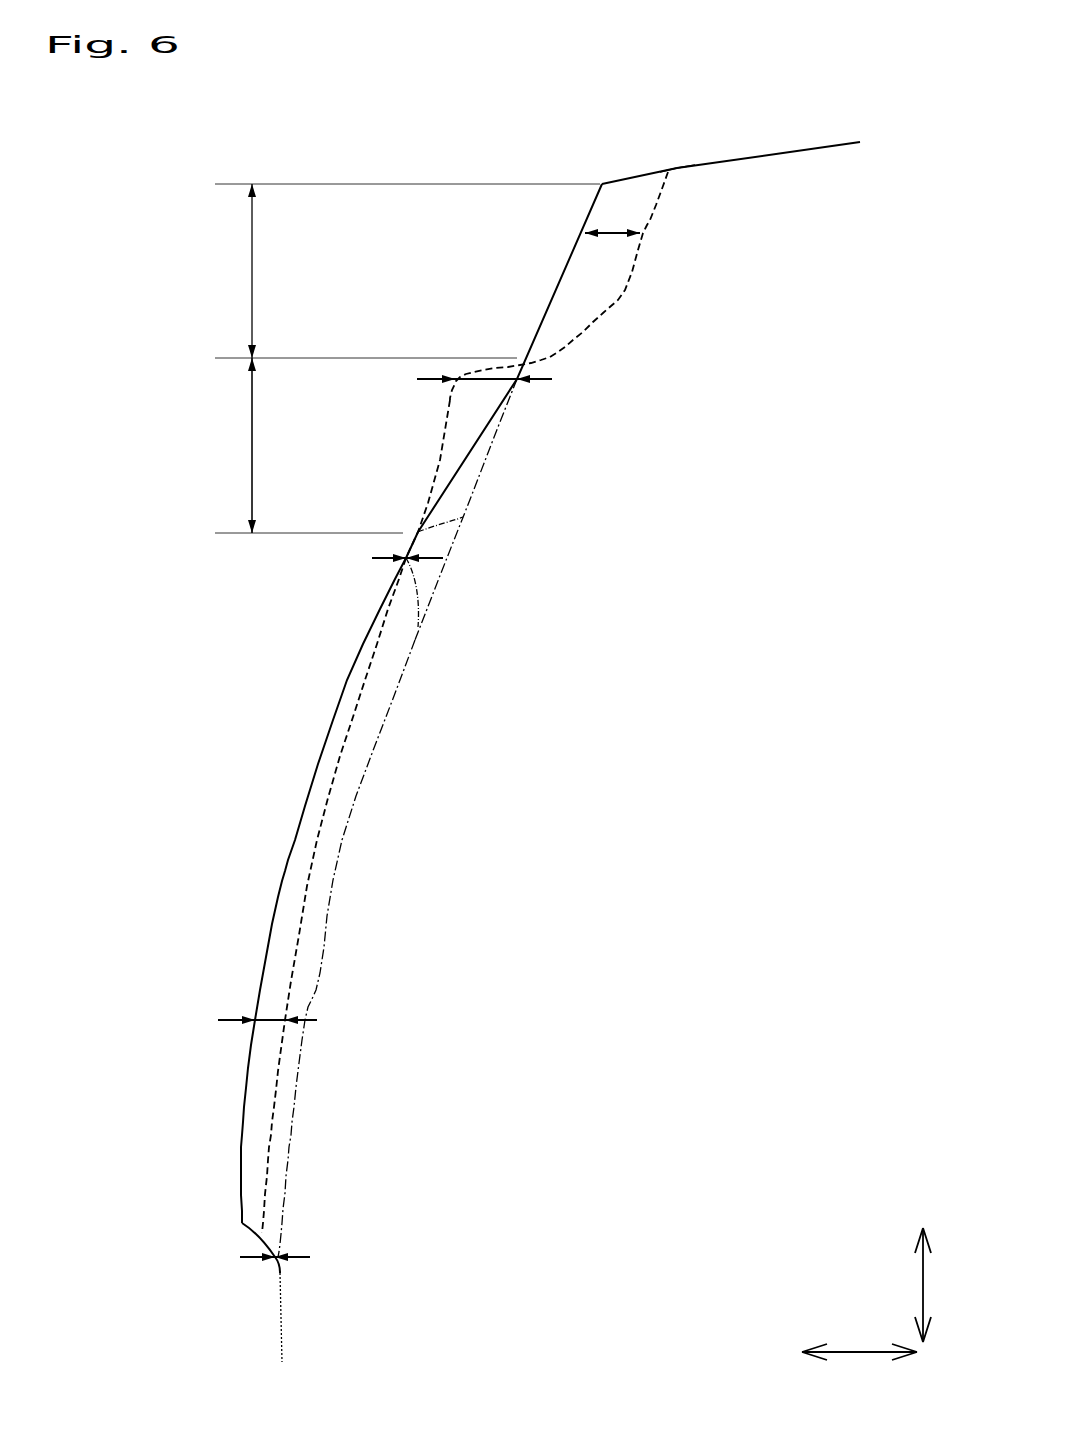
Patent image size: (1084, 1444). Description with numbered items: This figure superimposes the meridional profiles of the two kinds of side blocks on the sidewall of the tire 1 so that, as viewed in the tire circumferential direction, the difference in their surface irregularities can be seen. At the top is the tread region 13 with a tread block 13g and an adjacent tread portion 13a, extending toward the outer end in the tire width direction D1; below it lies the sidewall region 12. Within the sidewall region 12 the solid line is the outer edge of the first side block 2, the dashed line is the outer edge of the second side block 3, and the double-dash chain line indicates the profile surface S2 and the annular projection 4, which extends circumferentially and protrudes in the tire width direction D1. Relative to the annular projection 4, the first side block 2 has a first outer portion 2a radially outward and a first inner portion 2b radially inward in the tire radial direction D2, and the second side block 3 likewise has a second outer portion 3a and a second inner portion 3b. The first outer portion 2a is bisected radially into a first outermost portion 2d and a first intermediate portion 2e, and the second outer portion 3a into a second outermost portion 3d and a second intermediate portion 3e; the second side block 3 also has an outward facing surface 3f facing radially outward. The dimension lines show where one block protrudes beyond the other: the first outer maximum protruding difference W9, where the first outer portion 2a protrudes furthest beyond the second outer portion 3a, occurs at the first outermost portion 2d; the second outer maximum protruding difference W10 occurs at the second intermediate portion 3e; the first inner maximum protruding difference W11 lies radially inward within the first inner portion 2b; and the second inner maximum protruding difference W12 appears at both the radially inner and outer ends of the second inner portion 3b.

The blade body 1 is at (160, 138).
The first side block 2 is at (342, 678).
The first outer portion 2a is at (568, 267).
The first inner portion 2b is at (278, 897).
The first outermost portion 2d is at (398, 358).
The first intermediate portion 2e is at (224, 445).
The second side block 3 is at (428, 467).
The second outer portion 3a is at (445, 418).
The second inner portion 3b is at (317, 848).
The second outermost portion 3d is at (224, 271).
The second intermediate portion 3e is at (224, 445).
The outward facing surface 3f is at (478, 360).
The annular projection 4 is at (417, 607).
The sidewall region 12 is at (192, 617).
The tread region 13 is at (614, 157).
The inclined top surface 13a is at (762, 157).
The tread block 13g is at (680, 168).
The profile surface S2 is at (318, 975).
The first outer maximum protruding difference W9 is at (612, 221).
The second outer maximum protruding difference W10 is at (507, 380).
The first inner maximum protruding difference W11 is at (289, 1022).
The second inner maximum protruding difference W12 is at (341, 908).
The tire width direction D1 is at (859, 1363).
The tire radial direction D2 is at (934, 1285).